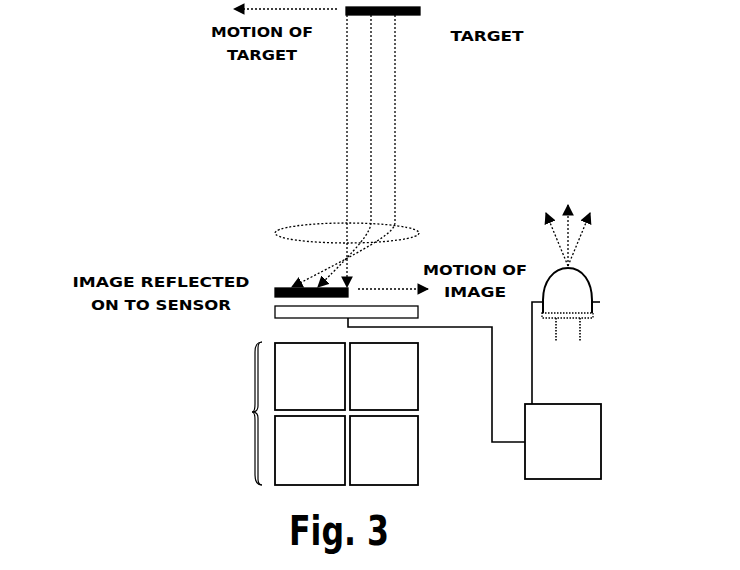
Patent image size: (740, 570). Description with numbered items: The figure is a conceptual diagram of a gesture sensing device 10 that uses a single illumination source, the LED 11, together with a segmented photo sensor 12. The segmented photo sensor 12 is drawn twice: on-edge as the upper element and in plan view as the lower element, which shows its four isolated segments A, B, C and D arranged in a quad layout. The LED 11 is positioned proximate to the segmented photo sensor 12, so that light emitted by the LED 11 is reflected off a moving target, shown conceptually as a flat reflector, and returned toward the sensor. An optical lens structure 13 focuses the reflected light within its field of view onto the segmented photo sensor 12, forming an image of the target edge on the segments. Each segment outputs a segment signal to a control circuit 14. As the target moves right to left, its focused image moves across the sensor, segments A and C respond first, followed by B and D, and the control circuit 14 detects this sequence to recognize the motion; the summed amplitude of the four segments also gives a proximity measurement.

The gesture sensing device 10 is at (184, 157).
The LED 11 is at (600, 302).
The segmented photo sensor 12 is at (275, 312).
The optical lens structure 13 is at (419, 233).
The control circuit 14 is at (601, 435).